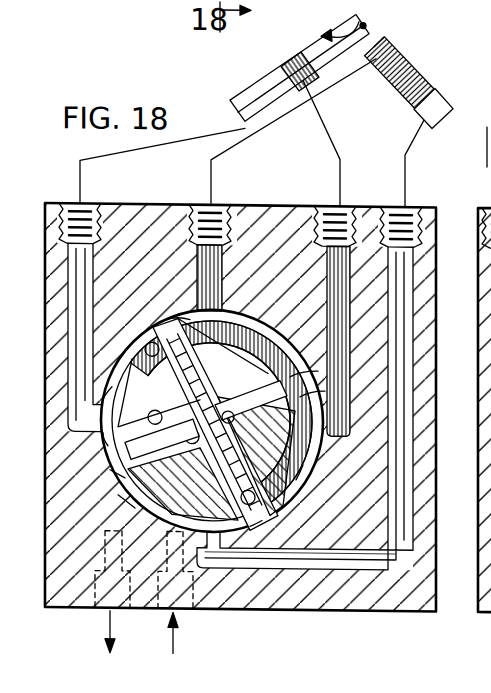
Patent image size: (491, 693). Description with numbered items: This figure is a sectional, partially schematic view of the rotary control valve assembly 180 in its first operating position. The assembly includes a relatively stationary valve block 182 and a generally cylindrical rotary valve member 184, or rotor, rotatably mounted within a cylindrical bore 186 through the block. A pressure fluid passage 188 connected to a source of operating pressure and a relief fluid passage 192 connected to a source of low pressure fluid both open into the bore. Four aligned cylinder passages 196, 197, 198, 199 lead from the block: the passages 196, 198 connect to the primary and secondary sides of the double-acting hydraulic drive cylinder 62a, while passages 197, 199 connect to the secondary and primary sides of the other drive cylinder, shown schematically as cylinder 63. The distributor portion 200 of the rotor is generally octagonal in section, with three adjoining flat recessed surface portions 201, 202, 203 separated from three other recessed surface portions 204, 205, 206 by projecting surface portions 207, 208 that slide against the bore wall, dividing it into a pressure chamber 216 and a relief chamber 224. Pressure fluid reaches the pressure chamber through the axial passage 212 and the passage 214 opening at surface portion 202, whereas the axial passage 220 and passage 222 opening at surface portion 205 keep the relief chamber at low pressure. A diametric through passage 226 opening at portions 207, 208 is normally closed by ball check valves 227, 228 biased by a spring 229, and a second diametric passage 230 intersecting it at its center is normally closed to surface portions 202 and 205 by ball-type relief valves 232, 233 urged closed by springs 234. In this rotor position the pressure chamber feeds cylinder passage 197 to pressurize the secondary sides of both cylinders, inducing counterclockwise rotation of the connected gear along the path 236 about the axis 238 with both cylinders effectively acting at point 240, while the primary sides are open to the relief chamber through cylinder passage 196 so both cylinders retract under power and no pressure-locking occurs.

The double-acting hydraulic drive cylinder 62a is at (262, 76).
The section plane rod 63 is at (428, 64).
The rotary control valve assembly 180 is at (47, 194).
The valve block 182 is at (152, 203).
The rotary valve member 184 is at (200, 308).
The cylindrical bore 186 is at (274, 329).
The pressure fluid passage 188 is at (188, 616).
The relief fluid passage 192 is at (104, 616).
The cylinder passage 196 is at (92, 203).
The cylinder passage 197 is at (222, 203).
The cylinder passage 198 is at (313, 203).
The cylinder passage 199 is at (416, 203).
The distributor portion 200 is at (228, 298).
The flat recessed surface portion 201 is at (297, 312).
The flat recessed surface portion 202 is at (320, 394).
The flat recessed surface portion 203 is at (304, 466).
The flat recessed surface portion 204 is at (206, 546).
The flat recessed surface portion 205 is at (120, 504).
The flat recessed surface portion 206 is at (132, 343).
The projecting surface portion 207 is at (258, 522).
The projecting surface portion 208 is at (190, 317).
The axial passage 212 is at (214, 382).
The passage 214 is at (276, 308).
The pressure chamber 216 is at (340, 429).
The axial passage 220 is at (166, 392).
The passage 222 is at (124, 449).
The relief chamber 224 is at (112, 469).
The diametric through passage 226 is at (240, 441).
The ball check valve 227 is at (146, 342).
The ball check valve 228 is at (242, 499).
The spring 229 is at (305, 376).
The diametric passage 230 is at (116, 486).
The ball-type relief valve 232 is at (262, 406).
The ball-type relief valve 233 is at (172, 448).
The spring 234 is at (205, 484).
The path 236 is at (363, 24).
The axis 238 is at (338, 20).
The point 240 is at (390, 38).